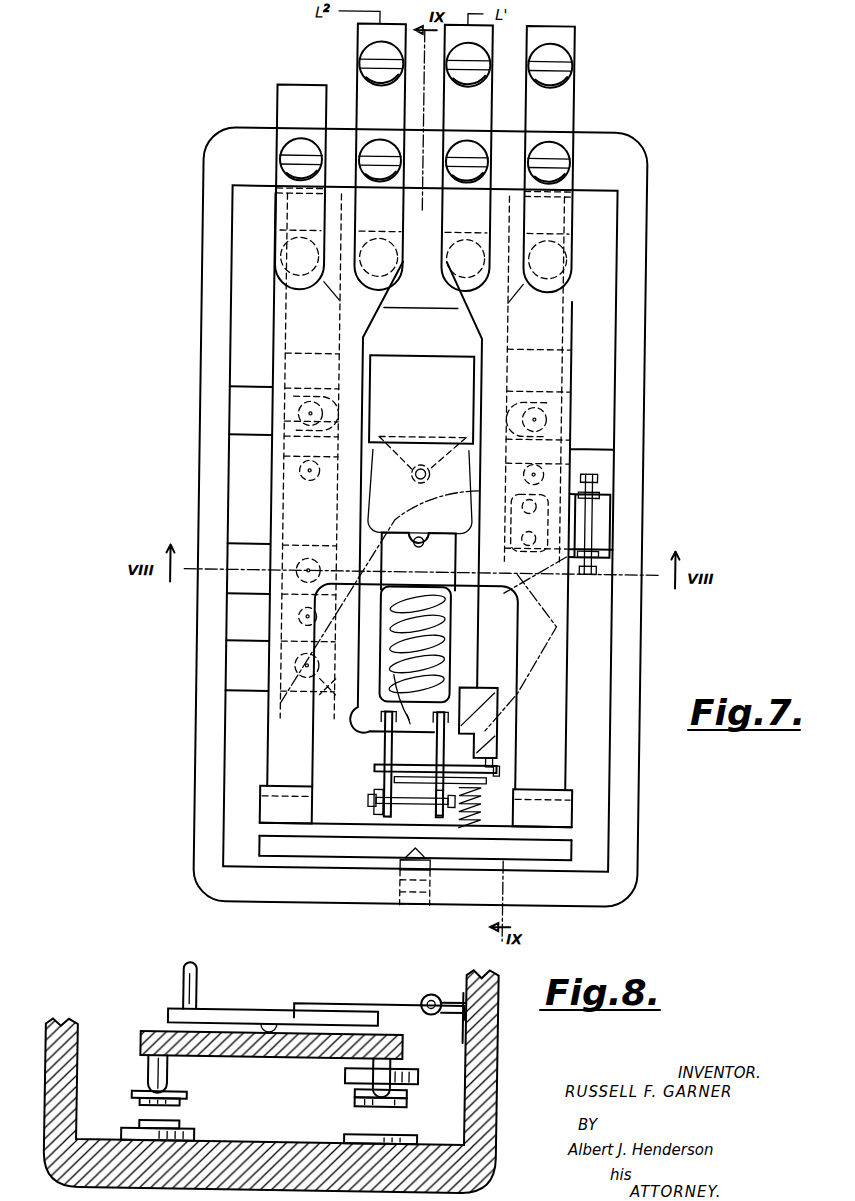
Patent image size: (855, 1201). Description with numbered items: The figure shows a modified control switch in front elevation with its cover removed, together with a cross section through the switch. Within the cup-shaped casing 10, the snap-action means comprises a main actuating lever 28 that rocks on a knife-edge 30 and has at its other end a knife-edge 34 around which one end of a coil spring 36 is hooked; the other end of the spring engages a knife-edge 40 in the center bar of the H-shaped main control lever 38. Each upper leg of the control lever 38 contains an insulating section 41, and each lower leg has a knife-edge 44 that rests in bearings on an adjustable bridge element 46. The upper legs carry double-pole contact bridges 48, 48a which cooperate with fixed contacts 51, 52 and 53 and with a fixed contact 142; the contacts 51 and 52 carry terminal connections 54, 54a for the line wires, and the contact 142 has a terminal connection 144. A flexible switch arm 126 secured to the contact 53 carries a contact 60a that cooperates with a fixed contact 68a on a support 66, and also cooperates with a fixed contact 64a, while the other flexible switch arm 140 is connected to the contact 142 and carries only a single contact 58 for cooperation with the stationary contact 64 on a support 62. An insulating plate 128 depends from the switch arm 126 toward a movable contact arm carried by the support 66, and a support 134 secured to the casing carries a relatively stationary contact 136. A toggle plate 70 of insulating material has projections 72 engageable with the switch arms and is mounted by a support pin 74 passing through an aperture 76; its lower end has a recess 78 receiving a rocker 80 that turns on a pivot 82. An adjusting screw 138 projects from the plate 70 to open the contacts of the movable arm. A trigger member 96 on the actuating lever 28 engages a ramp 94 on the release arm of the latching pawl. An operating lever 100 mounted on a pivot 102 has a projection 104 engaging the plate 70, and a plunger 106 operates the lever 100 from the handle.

In FIG. 7, the casing 10 is at (642, 204).
In FIG. 8, the casing 10 is at (497, 1043).
In FIG. 7, the main actuating lever 28 is at (365, 505).
In FIG. 7, the knife-edge 30 is at (417, 443).
In FIG. 7, the knife-edge 34 is at (398, 735).
In FIG. 7, the coil spring 36 is at (452, 632).
In FIG. 7, the main control lever 38 is at (300, 460).
In FIG. 7, the knife-edge 40 is at (418, 552).
In FIG. 7, the insulating section 41 is at (275, 342).
In FIG. 7, the knife-edge 44 is at (557, 790).
In FIG. 7, the bridge element 46 is at (562, 813).
In FIG. 7, the contact bridge 48 is at (560, 292).
In FIG. 7, the contact bridge 48a is at (300, 288).
In FIG. 7, the fixed contact 51 is at (480, 106).
In FIG. 7, the fixed contact 52 is at (352, 92).
In FIG. 7, the fixed contact 53 is at (296, 86).
In FIG. 7, the terminal connection 54 is at (470, 45).
In FIG. 7, the terminal connection 54a is at (352, 55).
In FIG. 8, the contact 58 is at (410, 1104).
In FIG. 8, the contact 60a is at (180, 1104).
In FIG. 7, the support 62 is at (250, 411).
In FIG. 8, the support 62 is at (345, 1075).
In FIG. 7, the fixed contact 64 is at (575, 392).
In FIG. 8, the fixed contact 64 is at (408, 1093).
In FIG. 7, the fixed contact 64a is at (270, 423).
In FIG. 7, the support 66 is at (270, 590).
In FIG. 8, the support 66 is at (345, 1138).
In FIG. 7, the fixed contact 68a is at (275, 620).
In FIG. 8, the fixed contact 68a is at (175, 1126).
In FIG. 7, the toggle plate 70 is at (434, 681).
In FIG. 8, the toggle plate 70 is at (142, 1035).
In FIG. 7, the projection 72 is at (300, 485).
In FIG. 8, the projection 72 is at (148, 1077).
In FIG. 7, the support pin 74 is at (397, 440).
In FIG. 7, the aperture 76 is at (445, 443).
In FIG. 7, the recess 78 is at (392, 730).
In FIG. 7, the rocker 80 is at (380, 775).
In FIG. 7, the pivot 82 is at (372, 802).
In FIG. 7, the ramp 94 is at (493, 762).
In FIG. 7, the trigger member 96 is at (492, 718).
In FIG. 7, the operating lever 100 is at (423, 597).
In FIG. 8, the operating lever 100 is at (240, 1018).
In FIG. 7, the pivot 102 is at (595, 515).
In FIG. 8, the pivot 102 is at (431, 992).
In FIG. 8, the projection 104 is at (293, 1012).
In FIG. 7, the plunger 106 is at (283, 712).
In FIG. 8, the plunger 106 is at (197, 972).
In FIG. 7, the flexible switch arm 126 is at (283, 353).
In FIG. 8, the flexible switch arm 126 is at (190, 1095).
In FIG. 7, the insulating plate 128 is at (300, 710).
In FIG. 7, the support 134 is at (265, 668).
In FIG. 7, the stationary contact 136 is at (290, 680).
In FIG. 7, the adjusting screw 138 is at (290, 655).
In FIG. 7, the flexible switch arm 140 is at (570, 347).
In FIG. 8, the flexible switch arm 140 is at (420, 1116).
In FIG. 7, the fixed contact 142 is at (572, 100).
In FIG. 7, the terminal connection 144 is at (566, 50).